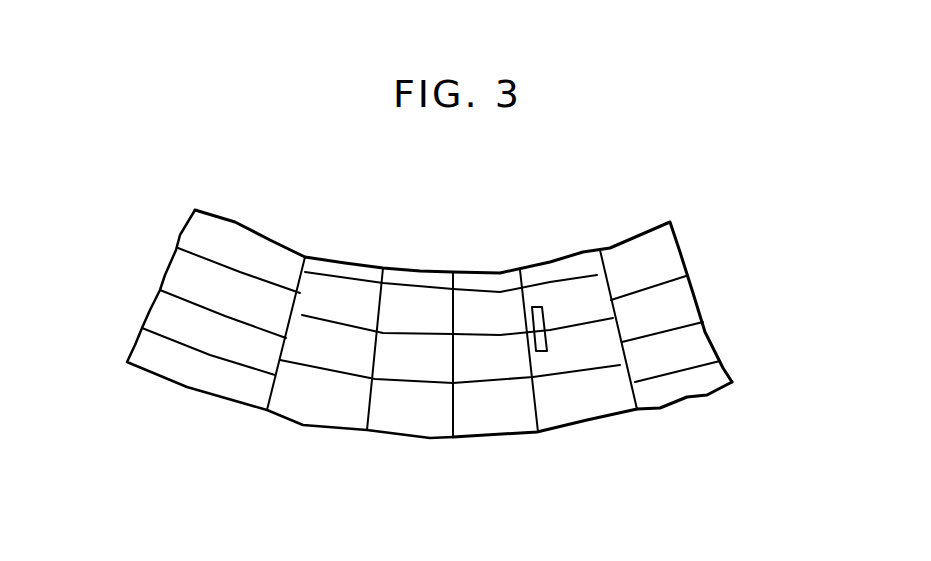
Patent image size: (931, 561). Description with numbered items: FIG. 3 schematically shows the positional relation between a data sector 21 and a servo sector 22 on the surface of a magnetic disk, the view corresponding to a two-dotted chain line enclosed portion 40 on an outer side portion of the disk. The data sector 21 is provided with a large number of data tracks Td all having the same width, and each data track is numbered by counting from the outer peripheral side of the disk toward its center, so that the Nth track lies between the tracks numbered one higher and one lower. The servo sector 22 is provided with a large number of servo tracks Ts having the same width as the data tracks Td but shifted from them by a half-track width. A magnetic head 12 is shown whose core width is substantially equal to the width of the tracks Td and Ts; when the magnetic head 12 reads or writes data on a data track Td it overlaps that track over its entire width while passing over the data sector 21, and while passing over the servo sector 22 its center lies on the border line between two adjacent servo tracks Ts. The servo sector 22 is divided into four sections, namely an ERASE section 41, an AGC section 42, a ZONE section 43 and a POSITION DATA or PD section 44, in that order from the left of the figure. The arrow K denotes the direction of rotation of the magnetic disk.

The enclosed portion 40 is at (469, 318).
The magnetic head 12 is at (542, 306).
The ERASE section 41 is at (320, 403).
The AGC section 42 is at (400, 419).
The ZONE section 43 is at (485, 415).
The PD section 44 is at (607, 398).
The data sector 21 is at (661, 409).
The servo sector 22 is at (508, 441).
The servo track Ts is at (325, 298).
The data track Td is at (729, 389).
The arrow K is at (177, 403).